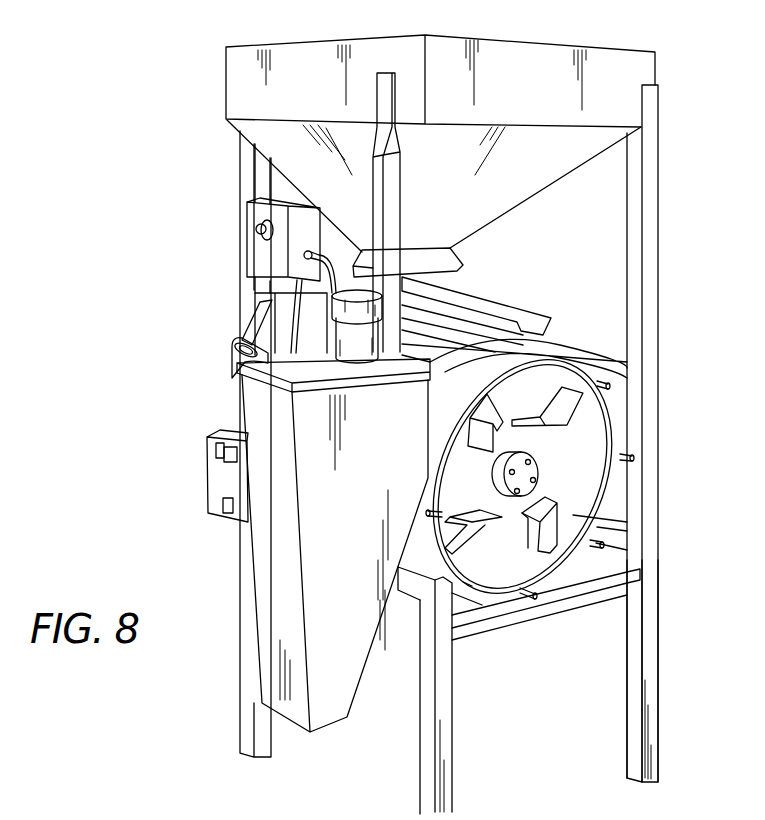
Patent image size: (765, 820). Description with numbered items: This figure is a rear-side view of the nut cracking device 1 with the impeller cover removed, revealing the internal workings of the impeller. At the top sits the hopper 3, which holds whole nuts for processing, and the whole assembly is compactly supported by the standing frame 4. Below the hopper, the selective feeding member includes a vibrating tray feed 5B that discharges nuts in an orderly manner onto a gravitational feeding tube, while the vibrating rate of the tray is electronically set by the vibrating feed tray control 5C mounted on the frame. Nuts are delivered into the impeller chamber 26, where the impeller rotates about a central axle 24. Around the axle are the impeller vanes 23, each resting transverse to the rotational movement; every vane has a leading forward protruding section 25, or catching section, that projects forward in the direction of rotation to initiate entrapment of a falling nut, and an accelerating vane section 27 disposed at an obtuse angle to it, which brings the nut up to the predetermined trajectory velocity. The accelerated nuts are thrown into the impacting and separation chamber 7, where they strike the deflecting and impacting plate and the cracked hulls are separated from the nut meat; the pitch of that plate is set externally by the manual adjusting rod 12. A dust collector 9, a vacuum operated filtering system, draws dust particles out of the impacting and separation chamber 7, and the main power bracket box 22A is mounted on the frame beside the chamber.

The nut cracking device 1 is at (688, 202).
The hopper 3 is at (601, 69).
The standing frame 4 is at (653, 632).
The vibrating tray feed 5B is at (472, 292).
The vibrating feed tray control 5C is at (253, 248).
The impacting and separation chamber 7 is at (275, 548).
The dust collector 9 is at (347, 342).
The manual adjusting rod 12 is at (255, 328).
The main power bracket box 22A is at (222, 474).
The impeller vanes 23 is at (463, 543).
The central axis or axle 24 is at (538, 475).
The leading forward protruding section 25 is at (557, 518).
The impeller chamber 26 is at (592, 428).
The accelerating vane section 27 is at (557, 540).